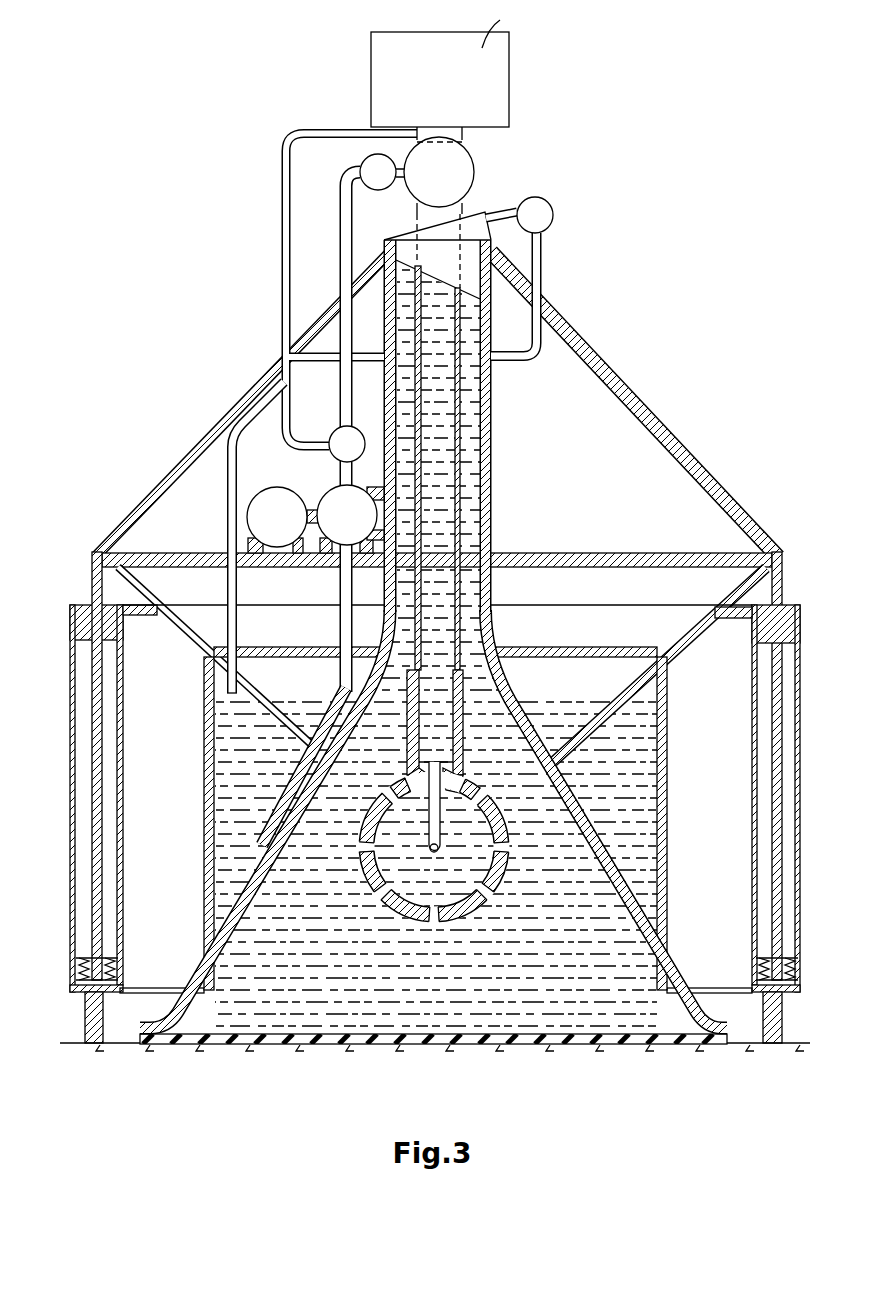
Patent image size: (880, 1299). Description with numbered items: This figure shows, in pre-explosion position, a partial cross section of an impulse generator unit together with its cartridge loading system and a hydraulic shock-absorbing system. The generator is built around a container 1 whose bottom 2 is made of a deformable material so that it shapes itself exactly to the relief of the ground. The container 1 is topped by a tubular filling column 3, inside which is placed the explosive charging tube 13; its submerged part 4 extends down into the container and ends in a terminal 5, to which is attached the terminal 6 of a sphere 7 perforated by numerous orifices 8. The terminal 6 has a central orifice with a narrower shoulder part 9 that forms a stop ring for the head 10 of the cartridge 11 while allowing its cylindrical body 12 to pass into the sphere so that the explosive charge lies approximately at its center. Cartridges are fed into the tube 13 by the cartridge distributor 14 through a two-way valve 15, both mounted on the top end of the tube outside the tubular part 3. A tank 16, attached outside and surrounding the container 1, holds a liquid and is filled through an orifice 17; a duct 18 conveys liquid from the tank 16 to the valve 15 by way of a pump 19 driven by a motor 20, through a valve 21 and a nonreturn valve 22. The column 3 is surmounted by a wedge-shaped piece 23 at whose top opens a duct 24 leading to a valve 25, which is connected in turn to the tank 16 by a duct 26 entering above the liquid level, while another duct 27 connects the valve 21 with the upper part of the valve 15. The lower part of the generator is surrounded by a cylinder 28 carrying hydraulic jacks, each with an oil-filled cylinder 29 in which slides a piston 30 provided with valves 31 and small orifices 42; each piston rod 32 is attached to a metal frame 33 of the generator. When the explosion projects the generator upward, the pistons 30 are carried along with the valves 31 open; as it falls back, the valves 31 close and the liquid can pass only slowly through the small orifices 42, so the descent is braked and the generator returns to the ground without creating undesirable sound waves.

The container 1 is at (512, 697).
The bottom 2 is at (546, 1038).
The tubular filling column 3 is at (488, 380).
The submerged part 4 is at (457, 633).
The terminal 5 is at (461, 702).
The terminal of the sphere 6 is at (457, 762).
The sphere 7 is at (509, 806).
The orifices 8 is at (447, 915).
The shoulder part 9 is at (453, 780).
The head of the cartridge 10 is at (423, 764).
The cartridge 11 is at (437, 849).
The cylindrical body of the cartridge 12 is at (432, 828).
The explosive charging tube 13 is at (458, 425).
The cartridge distributor 14 is at (509, 59).
The two-way valve 15 is at (470, 158).
The tank 16 is at (204, 744).
The orifice 17 is at (275, 650).
The duct 18 is at (346, 384).
The pump 19 is at (337, 492).
The motor 20 is at (272, 492).
The valve 21 is at (354, 430).
The nonreturn valve 22 is at (360, 168).
The wedge-shaped piece 23 is at (478, 231).
The duct 24 is at (503, 215).
The valve 25 is at (551, 212).
The duct 26 is at (526, 351).
The duct 27 is at (283, 218).
The cylinder 28 is at (94, 1022).
The cylinder of hydraulic jack 29 is at (121, 795).
The piston 30 is at (101, 960).
The valves 31 is at (110, 990).
The piston rod 32 is at (97, 692).
The metal frame 33 is at (648, 417).
The small orifices 42 is at (765, 955).